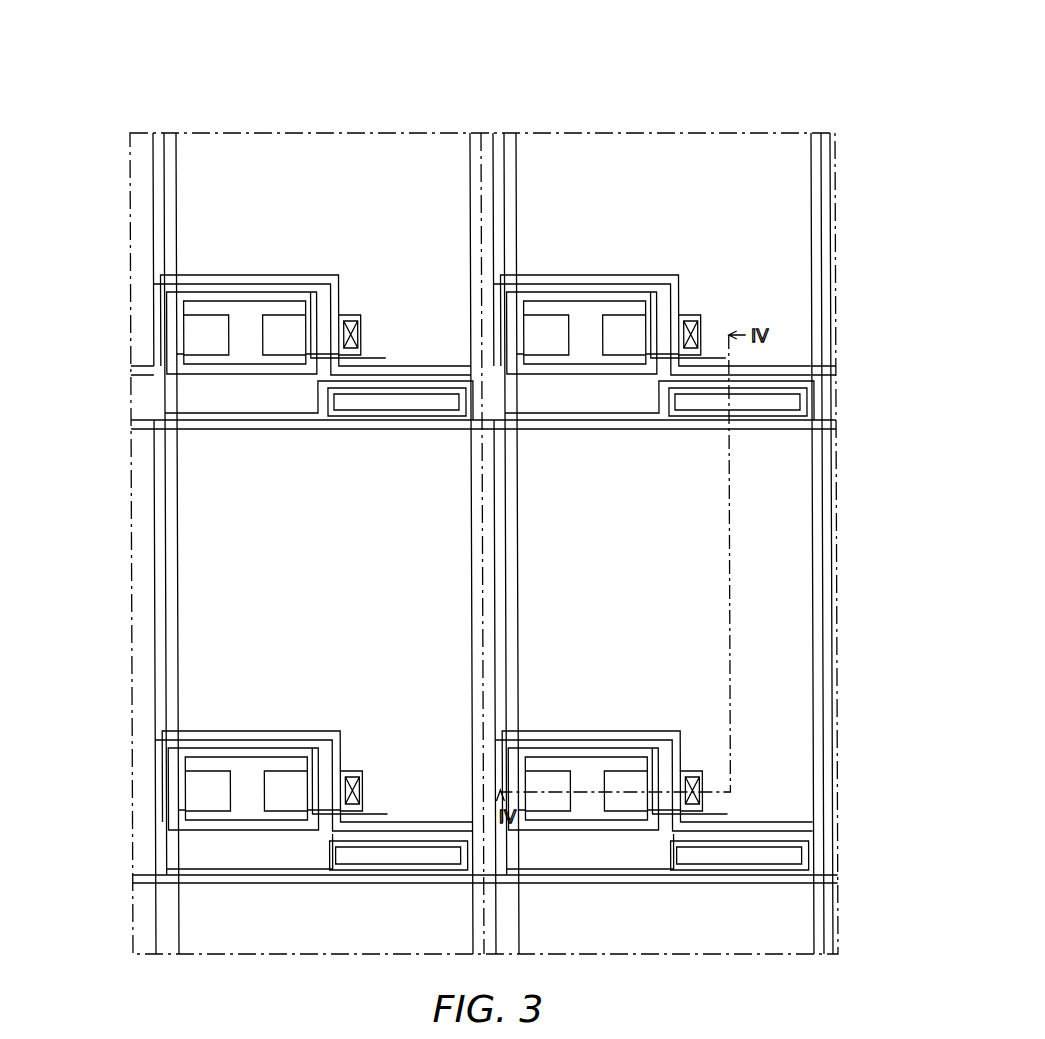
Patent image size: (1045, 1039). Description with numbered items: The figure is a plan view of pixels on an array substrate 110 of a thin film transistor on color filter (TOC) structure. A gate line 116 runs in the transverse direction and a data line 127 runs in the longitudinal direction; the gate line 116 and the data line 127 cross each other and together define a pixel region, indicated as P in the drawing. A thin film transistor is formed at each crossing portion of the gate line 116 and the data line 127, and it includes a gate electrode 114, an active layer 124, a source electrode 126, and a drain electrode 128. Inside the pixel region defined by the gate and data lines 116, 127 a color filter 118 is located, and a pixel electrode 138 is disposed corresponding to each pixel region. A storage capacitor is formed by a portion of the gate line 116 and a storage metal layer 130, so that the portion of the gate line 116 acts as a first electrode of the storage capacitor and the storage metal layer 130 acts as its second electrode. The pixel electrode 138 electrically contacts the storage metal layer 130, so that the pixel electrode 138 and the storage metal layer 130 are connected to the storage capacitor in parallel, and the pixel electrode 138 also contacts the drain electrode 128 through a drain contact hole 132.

The array substrate 110 is at (667, 119).
The gate electrode 114 is at (270, 275).
The gate line 116 is at (133, 398).
The color filter 118 is at (152, 239).
The active layer 124 is at (587, 366).
The source electrode 126 is at (550, 355).
The data line 127 is at (469, 527).
The drain electrode 128 is at (630, 355).
The storage metal layer 130 is at (742, 871).
The drain contact hole 132 is at (692, 768).
The pixel electrode 138 is at (822, 640).
The pixel region P is at (797, 502).